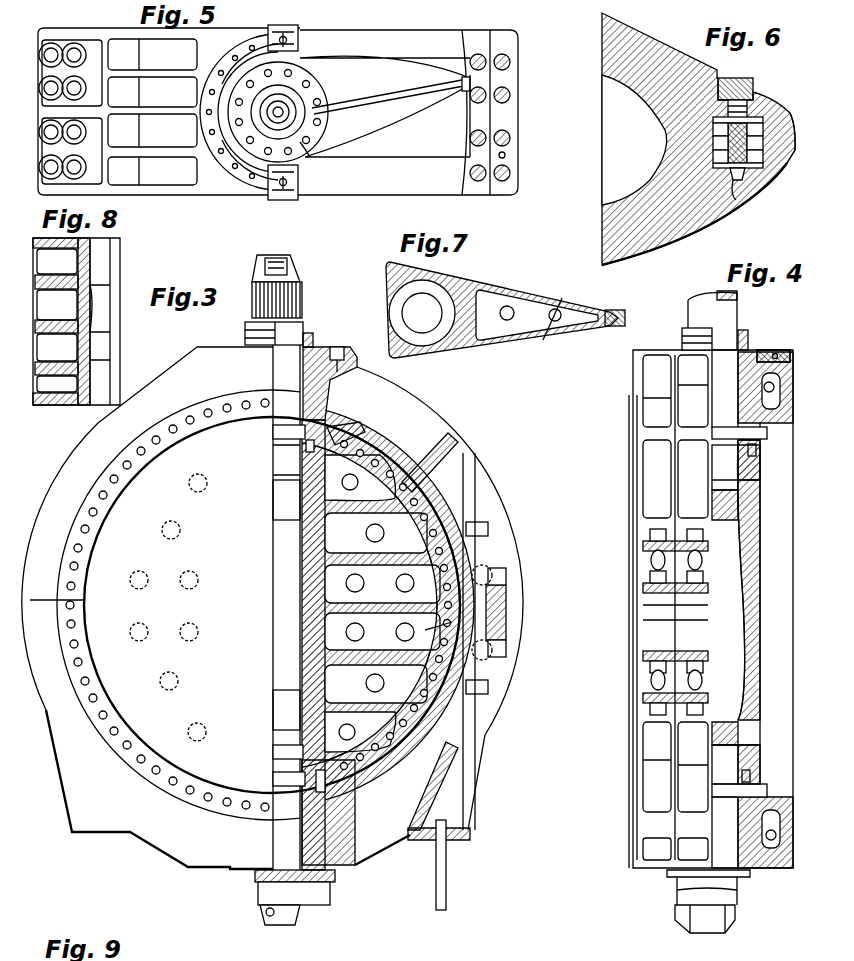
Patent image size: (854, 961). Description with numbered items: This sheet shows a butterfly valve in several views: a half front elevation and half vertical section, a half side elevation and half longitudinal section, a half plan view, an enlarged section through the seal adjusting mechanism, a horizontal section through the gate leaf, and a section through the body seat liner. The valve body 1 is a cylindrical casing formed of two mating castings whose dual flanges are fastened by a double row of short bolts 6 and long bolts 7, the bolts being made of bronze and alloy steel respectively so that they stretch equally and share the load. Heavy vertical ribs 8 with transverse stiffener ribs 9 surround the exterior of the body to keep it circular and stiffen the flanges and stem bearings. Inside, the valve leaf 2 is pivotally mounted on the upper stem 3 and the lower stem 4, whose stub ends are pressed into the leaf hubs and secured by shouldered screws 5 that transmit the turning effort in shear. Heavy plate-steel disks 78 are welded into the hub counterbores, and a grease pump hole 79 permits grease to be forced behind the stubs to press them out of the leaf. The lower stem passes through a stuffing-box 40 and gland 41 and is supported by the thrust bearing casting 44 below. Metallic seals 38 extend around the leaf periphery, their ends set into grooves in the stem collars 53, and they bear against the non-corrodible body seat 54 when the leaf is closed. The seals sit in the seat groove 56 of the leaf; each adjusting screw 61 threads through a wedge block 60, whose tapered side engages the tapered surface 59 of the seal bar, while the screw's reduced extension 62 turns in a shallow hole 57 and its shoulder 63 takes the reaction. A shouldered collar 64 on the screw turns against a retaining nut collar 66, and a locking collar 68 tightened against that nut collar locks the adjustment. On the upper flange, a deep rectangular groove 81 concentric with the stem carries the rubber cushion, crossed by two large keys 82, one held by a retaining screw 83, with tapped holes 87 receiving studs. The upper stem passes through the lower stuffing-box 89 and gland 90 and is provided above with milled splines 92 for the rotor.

In FIG. 5, the valve body 1 is at (72, 28).
In FIG. 8, the valve body 1 is at (74, 260).
In FIG. 4, the valve body 1 is at (793, 418).
In FIG. 3, the valve body 1 is at (405, 752).
In FIG. 5, the valve leaf 2 is at (388, 58).
In FIG. 6, the valve leaf 2 is at (648, 254).
In FIG. 7, the valve leaf 2 is at (512, 324).
In FIG. 4, the valve leaf 2 is at (752, 538).
In FIG. 3, the valve leaf 2 is at (232, 575).
In FIG. 5, the upper stem 3 is at (318, 118).
In FIG. 4, the upper stem 3 is at (730, 308).
In FIG. 3, the upper stem 3 is at (302, 306).
In FIG. 4, the lower stem 4 is at (726, 806).
In FIG. 3, the lower stem 4 is at (273, 750).
In FIG. 5, the shouldered screws 5 is at (305, 158).
In FIG. 4, the shouldered screws 5 is at (756, 452).
In FIG. 3, the shouldered screws 5 is at (322, 458).
In FIG. 4, the short bolts 6 is at (650, 578).
In FIG. 3, the short bolts 6 is at (420, 534).
In FIG. 4, the long bolts 7 is at (650, 535).
In FIG. 3, the long bolts 7 is at (260, 600).
In FIG. 8, the vertical ribs 8 is at (32, 316).
In FIG. 4, the vertical ribs 8 is at (706, 500).
In FIG. 3, the vertical ribs 8 is at (420, 418).
In FIG. 4, the transverse stiffener ribs 9 is at (706, 432).
In FIG. 3, the transverse stiffener ribs 9 is at (452, 450).
In FIG. 5, the metallic seals 38 is at (410, 100).
In FIG. 6, the metallic seals 38 is at (793, 150).
In FIG. 7, the metallic seals 38 is at (625, 318).
In FIG. 3, the metallic seals 38 is at (370, 444).
In FIG. 3, the stuffing-box 40 is at (300, 878).
In FIG. 3, the gland 41 is at (300, 900).
In FIG. 3, the thrust bearing casting 44 is at (296, 918).
In FIG. 4, the stem collars 53 is at (755, 434).
In FIG. 3, the stem collars 53 is at (273, 434).
In FIG. 5, the body seat 54 is at (440, 144).
In FIG. 8, the body seat 54 is at (96, 342).
In FIG. 6, the seat groove 56 is at (714, 157).
In FIG. 6, the shallow hole 57 is at (742, 176).
In FIG. 6, the tapered surface 59 is at (763, 145).
In FIG. 6, the wedge block 60 is at (714, 143).
In FIG. 3, the wedge block 60 is at (440, 618).
In FIG. 6, the adjusting screws 61 is at (714, 129).
In FIG. 6, the extension 62 is at (753, 166).
In FIG. 6, the shoulder 63 is at (736, 182).
In FIG. 6, the shouldered collar 64 is at (763, 120).
In FIG. 6, the retaining nut collar 66 is at (752, 102).
In FIG. 6, the locking collar 68 is at (753, 82).
In FIG. 4, the plate-steel disks 78 is at (725, 617).
In FIG. 3, the plate-steel disks 78 is at (272, 605).
In FIG. 4, the grease pump hole 79 is at (762, 480).
In FIG. 5, the rectangular groove 81 is at (236, 62).
In FIG. 3, the rectangular groove 81 is at (345, 347).
In FIG. 5, the keys 82 is at (272, 25).
In FIG. 4, the keys 82 is at (790, 350).
In FIG. 5, the retaining screw 83 is at (298, 44).
In FIG. 4, the retaining screw 83 is at (775, 350).
In FIG. 5, the tapped holes 87 is at (214, 88).
In FIG. 4, the lower stuffing-box 89 is at (746, 334).
In FIG. 3, the lower stuffing-box 89 is at (312, 340).
In FIG. 4, the gland 90 is at (682, 331).
In FIG. 3, the gland 90 is at (300, 330).
In FIG. 3, the milled splines 92 is at (298, 276).